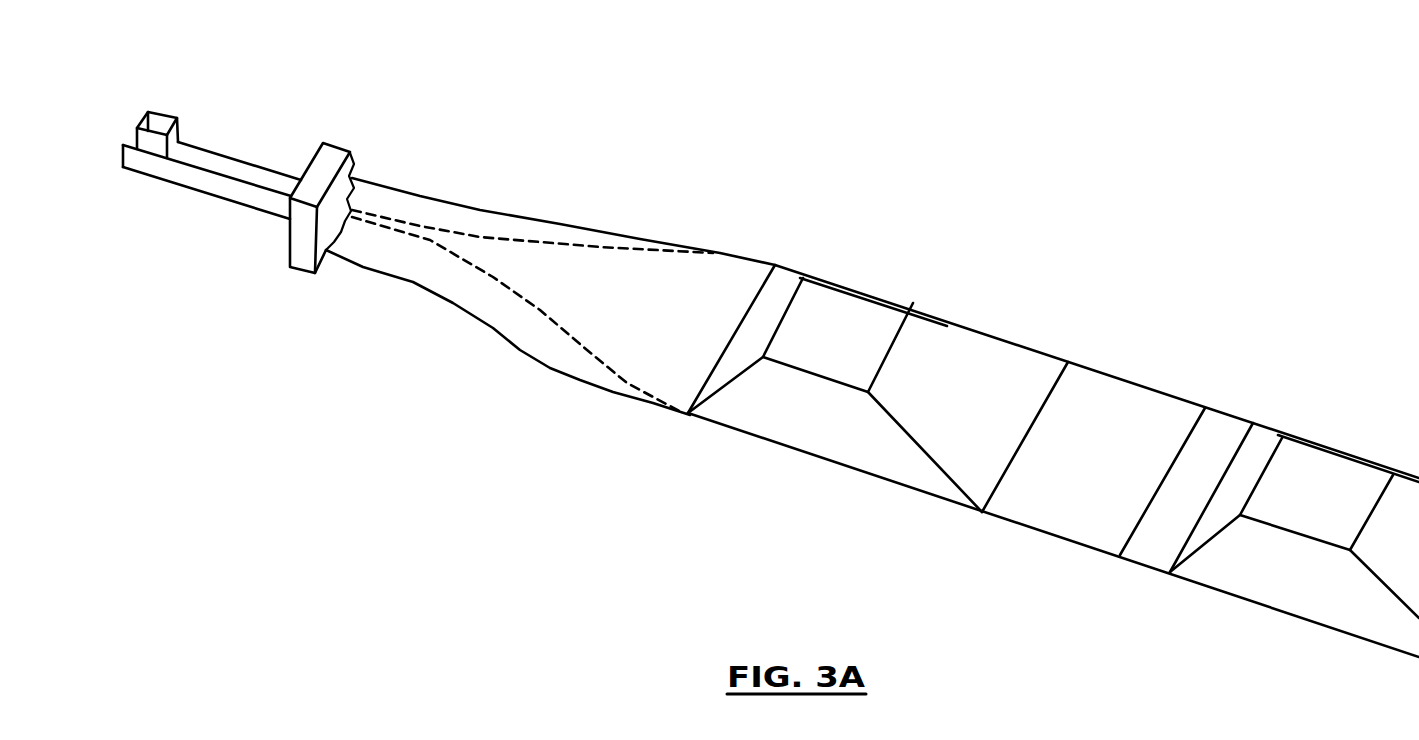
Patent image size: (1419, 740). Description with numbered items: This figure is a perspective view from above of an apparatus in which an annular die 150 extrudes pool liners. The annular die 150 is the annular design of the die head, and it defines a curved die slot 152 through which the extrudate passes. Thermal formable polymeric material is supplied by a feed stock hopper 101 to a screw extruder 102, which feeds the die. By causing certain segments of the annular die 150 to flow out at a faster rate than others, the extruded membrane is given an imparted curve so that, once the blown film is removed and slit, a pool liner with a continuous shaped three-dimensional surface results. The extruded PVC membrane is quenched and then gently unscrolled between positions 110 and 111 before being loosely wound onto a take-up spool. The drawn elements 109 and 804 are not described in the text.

The feed stock hopper 101 is at (167, 113).
The screw extruder 102 is at (225, 163).
The annular die 150 is at (333, 153).
The curved die slot 152 is at (352, 173).
The unscrolling position 110 is at (708, 248).
The horn lower wall 109 is at (415, 283).
The unscrolling position 111 is at (915, 305).
The flange end face 804 is at (783, 323).